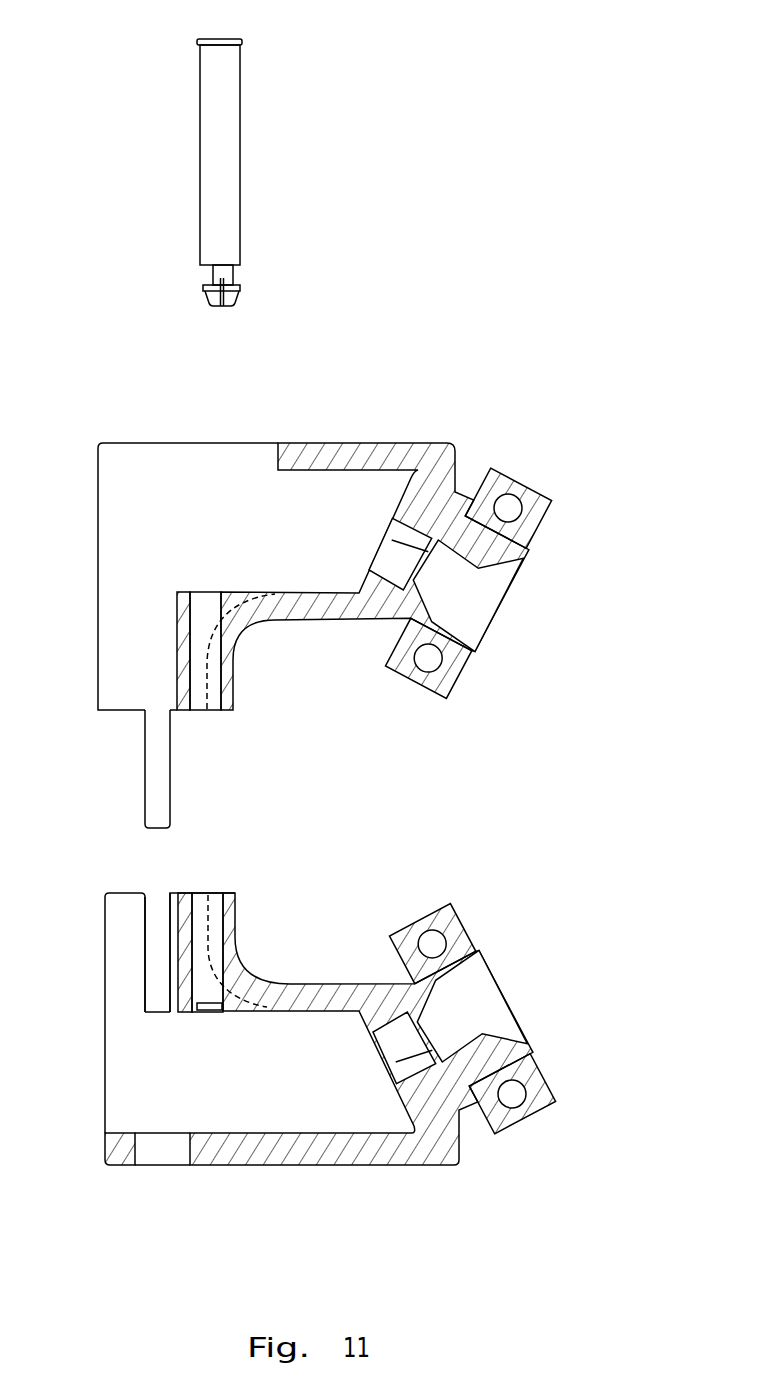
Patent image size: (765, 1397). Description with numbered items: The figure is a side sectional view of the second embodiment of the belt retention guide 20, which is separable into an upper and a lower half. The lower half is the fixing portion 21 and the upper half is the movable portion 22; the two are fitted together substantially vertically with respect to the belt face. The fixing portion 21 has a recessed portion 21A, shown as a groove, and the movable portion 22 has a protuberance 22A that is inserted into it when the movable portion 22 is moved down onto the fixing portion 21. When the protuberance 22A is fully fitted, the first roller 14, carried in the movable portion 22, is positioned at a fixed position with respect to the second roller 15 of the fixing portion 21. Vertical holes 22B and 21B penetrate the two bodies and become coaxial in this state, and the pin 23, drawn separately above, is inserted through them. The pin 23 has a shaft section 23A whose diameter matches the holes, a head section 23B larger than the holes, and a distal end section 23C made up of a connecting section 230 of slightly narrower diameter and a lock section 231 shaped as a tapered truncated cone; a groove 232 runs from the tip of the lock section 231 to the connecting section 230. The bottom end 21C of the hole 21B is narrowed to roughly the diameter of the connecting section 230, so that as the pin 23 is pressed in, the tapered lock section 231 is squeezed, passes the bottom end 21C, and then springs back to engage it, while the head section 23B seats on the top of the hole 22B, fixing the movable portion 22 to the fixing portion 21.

The first roller 14 is at (520, 482).
The second roller 15 is at (546, 1116).
The belt retention guide 20 is at (333, 1076).
The fixing portion 21 is at (333, 1056).
The recessed portion 21A is at (153, 908).
The hole 21B is at (217, 910).
The bottom end 21C is at (205, 1013).
The movable portion 22 is at (336, 597).
The protuberance 22A is at (146, 770).
The hole 22B is at (218, 697).
The pin 23 is at (220, 178).
The shaft section 23A is at (200, 90).
The head section 23B is at (219, 40).
The distal end section 23C is at (219, 316).
The connecting section 230 is at (236, 277).
The lock section 231 is at (241, 295).
The groove 232 is at (224, 307).